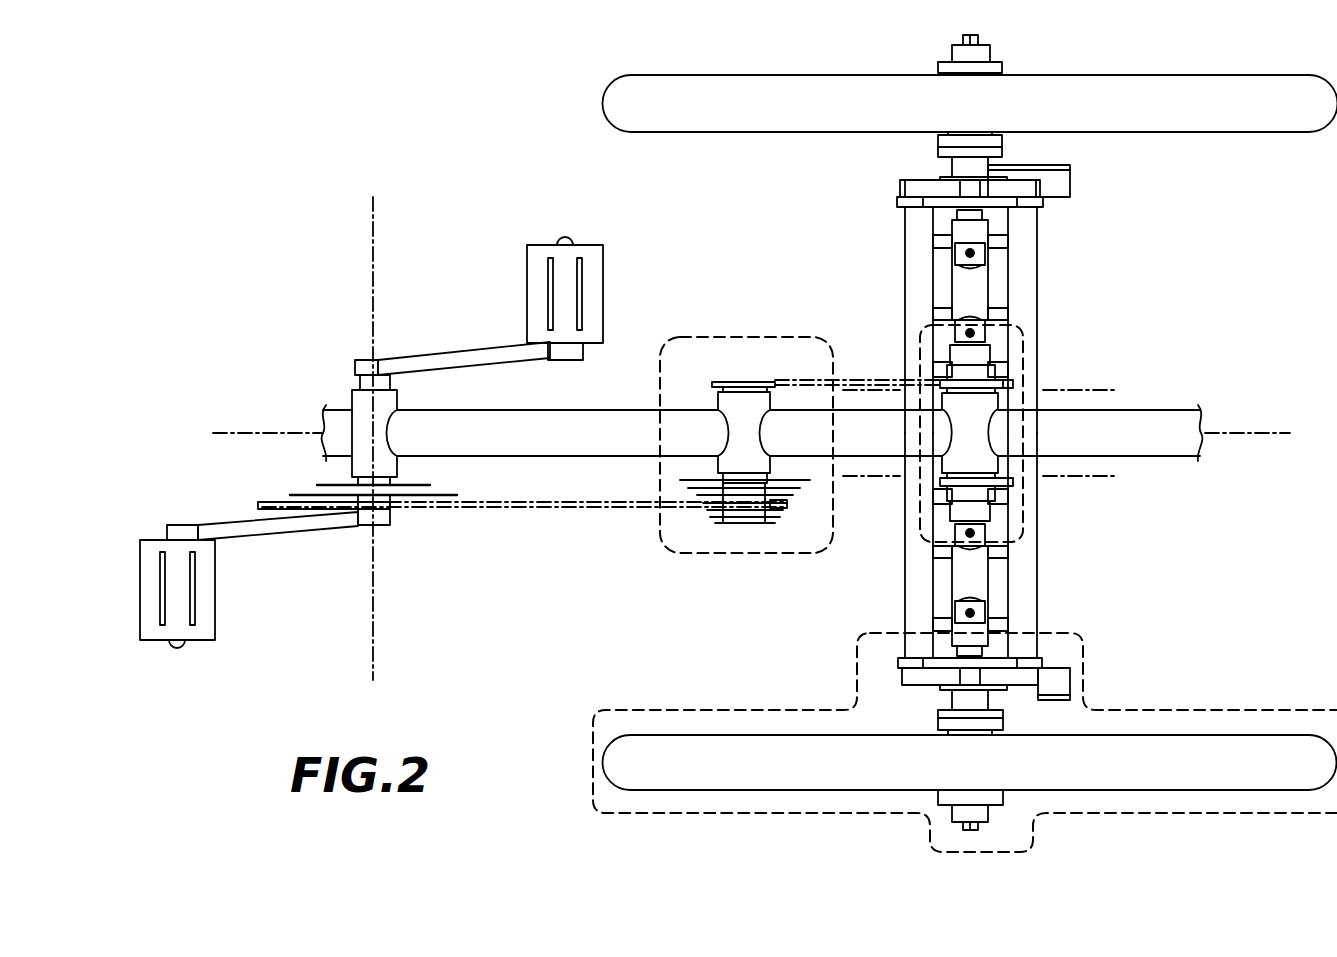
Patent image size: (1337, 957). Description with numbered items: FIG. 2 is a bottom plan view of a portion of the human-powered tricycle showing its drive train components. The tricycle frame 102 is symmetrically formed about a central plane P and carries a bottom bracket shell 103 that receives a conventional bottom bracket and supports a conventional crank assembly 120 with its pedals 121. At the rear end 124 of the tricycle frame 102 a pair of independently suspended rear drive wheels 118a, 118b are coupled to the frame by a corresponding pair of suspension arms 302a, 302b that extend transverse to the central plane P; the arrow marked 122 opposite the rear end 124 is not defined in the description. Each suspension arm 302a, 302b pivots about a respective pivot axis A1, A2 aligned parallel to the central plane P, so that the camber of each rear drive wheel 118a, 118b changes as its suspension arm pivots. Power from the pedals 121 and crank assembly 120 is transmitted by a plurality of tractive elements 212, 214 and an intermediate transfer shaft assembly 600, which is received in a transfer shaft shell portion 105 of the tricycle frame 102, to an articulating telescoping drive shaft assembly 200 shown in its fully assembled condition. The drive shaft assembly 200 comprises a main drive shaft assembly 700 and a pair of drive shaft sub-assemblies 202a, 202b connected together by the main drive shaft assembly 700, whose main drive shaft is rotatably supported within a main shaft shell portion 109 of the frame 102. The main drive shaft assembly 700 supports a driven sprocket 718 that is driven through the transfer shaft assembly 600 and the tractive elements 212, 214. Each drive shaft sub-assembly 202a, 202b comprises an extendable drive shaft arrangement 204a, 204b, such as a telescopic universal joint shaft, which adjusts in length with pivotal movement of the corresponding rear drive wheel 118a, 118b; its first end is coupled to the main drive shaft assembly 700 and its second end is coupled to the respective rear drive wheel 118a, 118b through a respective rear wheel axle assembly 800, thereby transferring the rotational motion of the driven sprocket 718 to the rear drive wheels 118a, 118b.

The tricycle frame 102 is at (513, 422).
The bottom bracket shell 103 is at (363, 400).
The transfer shaft shell portion 105 is at (727, 402).
The main shaft shell portion 109 is at (973, 457).
The rear drive wheel 118a is at (1232, 755).
The rear drive wheel 118b is at (1232, 110).
The crank assembly 120 is at (470, 357).
The pedals 121 is at (533, 272).
The rearward direction 122 is at (338, 217).
The rear end 124 is at (373, 217).
The articulating telescoping drive shaft assembly 200 is at (897, 297).
The drive shaft sub-assembly 202a is at (912, 583).
The drive shaft sub-assembly 202b is at (913, 265).
The extendable drive shaft arrangement 204a is at (977, 578).
The extendable drive shaft arrangement 204b is at (977, 300).
The tractive element 212 is at (543, 502).
The tractive element 214 is at (890, 383).
The suspension arm 302a is at (1030, 610).
The suspension arm 302b is at (1028, 250).
The intermediate transfer shaft assembly 600 is at (745, 337).
The main drive shaft assembly 700 is at (1032, 345).
The driven sprocket 718 is at (1010, 383).
The rear wheel axle assembly 800 is at (1027, 833).
The central plane P is at (250, 433).
The pivot axis A1 is at (1108, 476).
The pivot axis A2 is at (1114, 390).